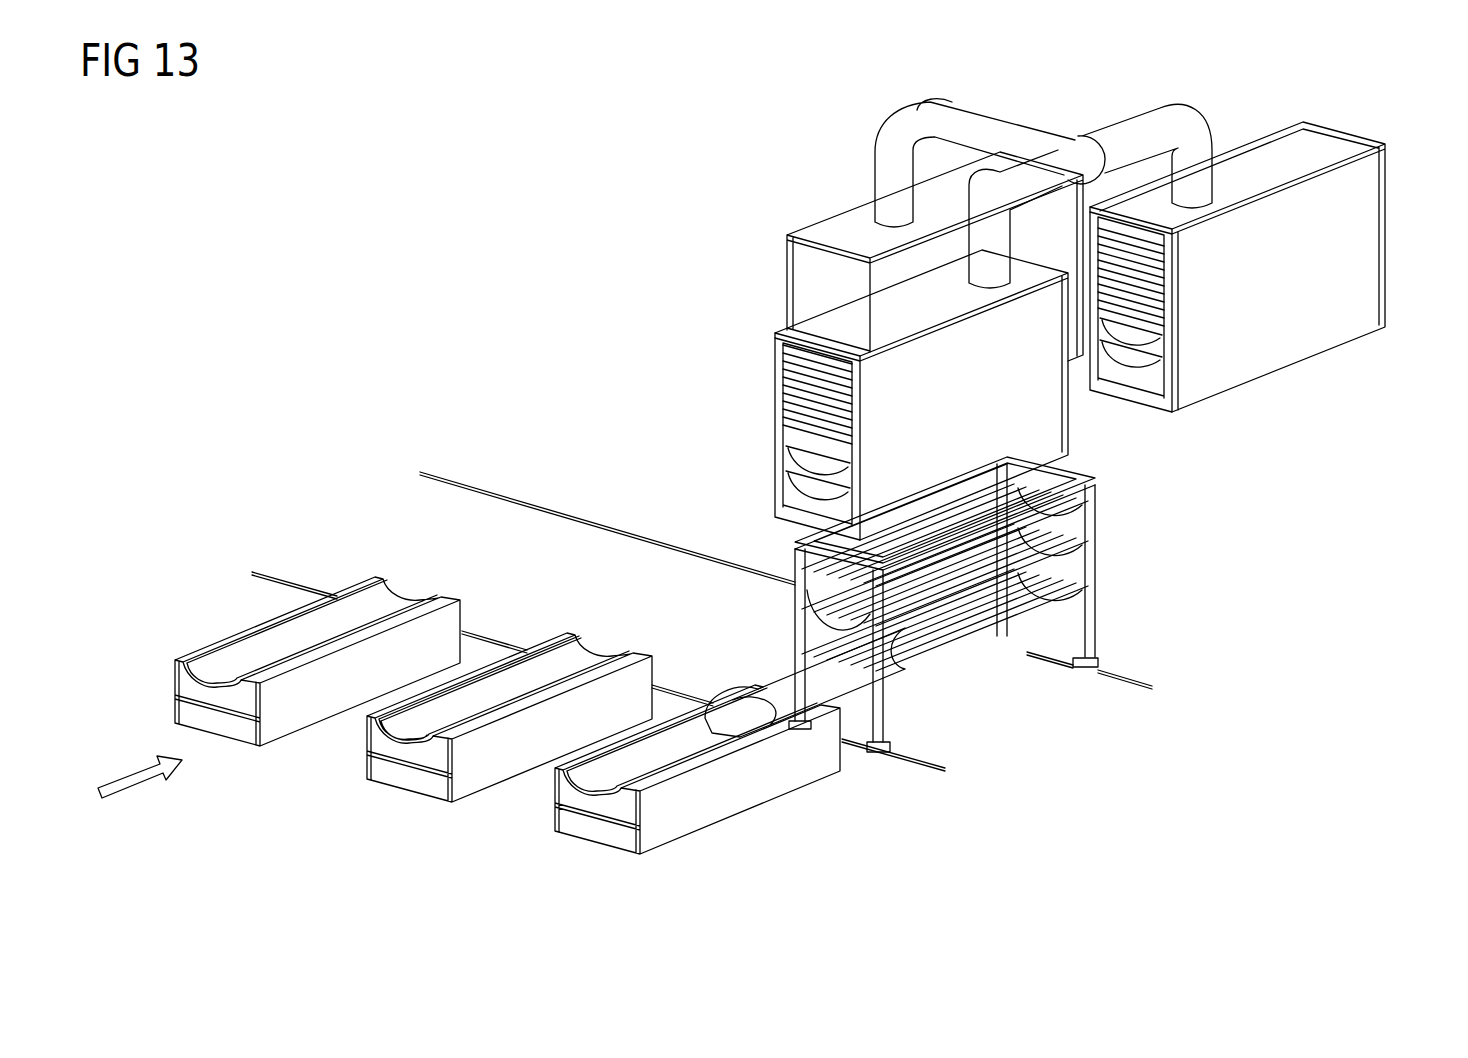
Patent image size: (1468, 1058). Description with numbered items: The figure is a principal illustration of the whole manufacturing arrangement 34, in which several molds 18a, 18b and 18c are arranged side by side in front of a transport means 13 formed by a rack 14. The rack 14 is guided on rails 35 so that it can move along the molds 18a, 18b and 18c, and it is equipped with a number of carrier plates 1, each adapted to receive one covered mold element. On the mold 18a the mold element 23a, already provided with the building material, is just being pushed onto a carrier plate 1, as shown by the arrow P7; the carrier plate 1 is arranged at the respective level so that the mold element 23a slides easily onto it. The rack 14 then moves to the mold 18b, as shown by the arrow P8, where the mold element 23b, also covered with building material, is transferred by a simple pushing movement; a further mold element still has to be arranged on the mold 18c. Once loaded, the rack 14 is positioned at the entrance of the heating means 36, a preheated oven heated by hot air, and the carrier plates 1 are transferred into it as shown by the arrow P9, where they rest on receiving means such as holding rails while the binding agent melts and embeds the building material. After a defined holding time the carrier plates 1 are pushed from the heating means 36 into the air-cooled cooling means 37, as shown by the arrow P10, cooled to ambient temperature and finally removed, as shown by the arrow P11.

The carrier plate 1 is at (787, 493).
The transport means 13 is at (992, 698).
The rack 14 is at (1096, 568).
The mold 18a is at (583, 857).
The mold 18b is at (397, 797).
The mold 18c is at (197, 627).
The mold element 23a is at (740, 727).
The mold element 23b is at (497, 692).
The manufacturing arrangement 34 is at (472, 310).
The rails 35 is at (920, 765).
The heating means 36 is at (807, 318).
The cooling means 37 is at (1255, 133).
The arrow P7 is at (808, 836).
The arrow P8 is at (685, 603).
The arrow P9 is at (685, 400).
The arrow P10 is at (1185, 492).
The arrow P11 is at (1420, 197).